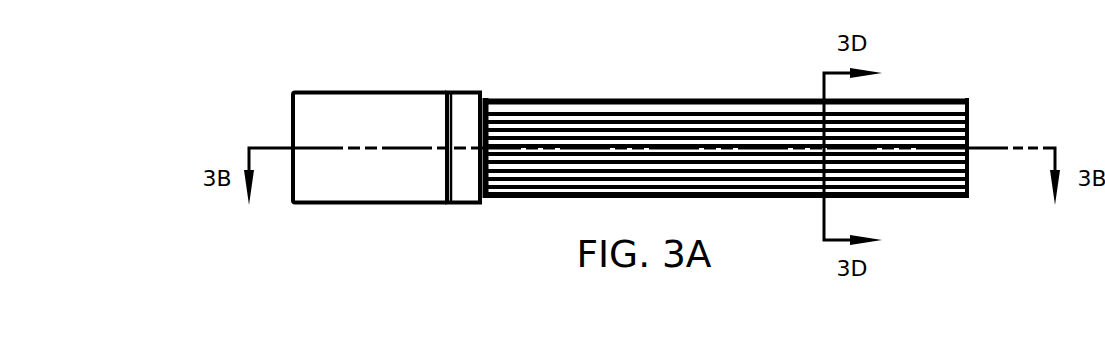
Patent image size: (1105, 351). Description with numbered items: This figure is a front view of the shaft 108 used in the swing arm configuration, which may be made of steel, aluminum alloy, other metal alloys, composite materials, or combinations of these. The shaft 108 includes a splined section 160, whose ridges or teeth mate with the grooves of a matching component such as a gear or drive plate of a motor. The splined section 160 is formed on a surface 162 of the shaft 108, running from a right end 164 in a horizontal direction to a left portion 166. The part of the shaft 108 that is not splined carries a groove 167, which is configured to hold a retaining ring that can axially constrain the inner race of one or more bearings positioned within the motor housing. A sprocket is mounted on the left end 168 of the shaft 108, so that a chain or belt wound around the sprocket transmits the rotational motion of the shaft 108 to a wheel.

The shaft 108 is at (568, 155).
The splined section 160 is at (747, 148).
The surface 162 is at (645, 130).
The right end 164 is at (968, 198).
The left portion 166 is at (487, 199).
The groove 167 is at (445, 204).
The left end 168 is at (317, 190).